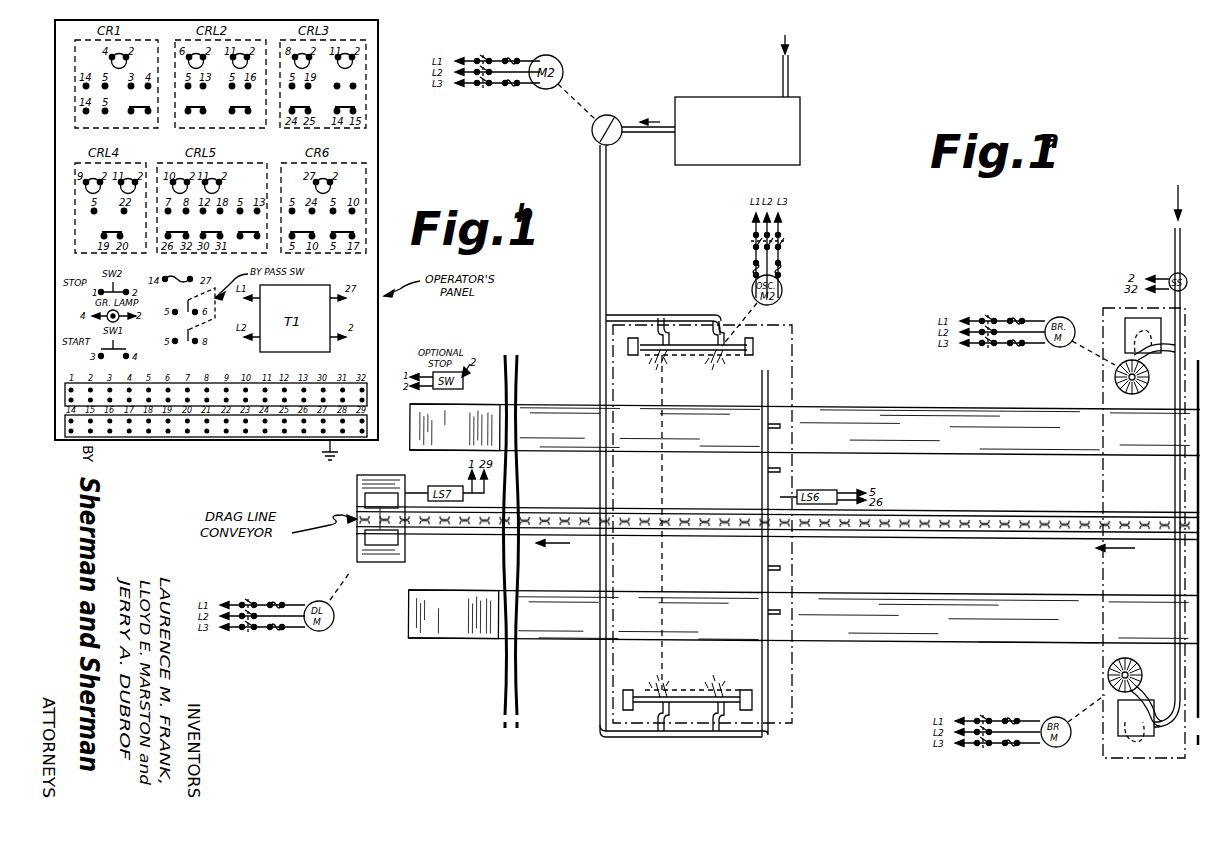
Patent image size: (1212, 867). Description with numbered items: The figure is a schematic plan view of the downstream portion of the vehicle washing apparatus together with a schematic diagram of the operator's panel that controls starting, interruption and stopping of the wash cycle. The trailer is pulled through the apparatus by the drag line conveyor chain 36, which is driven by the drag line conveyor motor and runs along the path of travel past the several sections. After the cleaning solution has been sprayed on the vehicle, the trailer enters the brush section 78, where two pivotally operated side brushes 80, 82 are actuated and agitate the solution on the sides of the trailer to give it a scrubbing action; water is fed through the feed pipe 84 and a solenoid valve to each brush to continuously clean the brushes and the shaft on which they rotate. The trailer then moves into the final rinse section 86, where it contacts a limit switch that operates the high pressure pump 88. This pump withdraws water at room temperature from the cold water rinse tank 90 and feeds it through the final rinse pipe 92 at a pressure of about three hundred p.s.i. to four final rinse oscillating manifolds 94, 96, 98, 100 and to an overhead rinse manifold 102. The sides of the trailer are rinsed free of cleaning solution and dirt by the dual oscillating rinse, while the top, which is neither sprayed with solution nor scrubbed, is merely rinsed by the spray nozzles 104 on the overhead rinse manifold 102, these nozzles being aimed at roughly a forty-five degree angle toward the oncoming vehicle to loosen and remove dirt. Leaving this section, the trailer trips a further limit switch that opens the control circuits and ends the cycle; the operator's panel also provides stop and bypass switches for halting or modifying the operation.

The drag line conveyor chain 36 is at (1030, 510).
The brush section 78 is at (1103, 495).
The side brush 80 is at (1108, 664).
The side brush 82 is at (1113, 377).
The feed pipe 84 is at (1173, 241).
The final rinse section 86 is at (796, 574).
The high pressure pump 88 is at (592, 129).
The cold water rinse tank 90 is at (726, 98).
The final rinse pipe 92 is at (608, 207).
The final rinse oscillating manifold 94 is at (707, 363).
The final rinse oscillating manifold 96 is at (651, 360).
The final rinse oscillating manifold 98 is at (708, 689).
The final rinse oscillating manifold 100 is at (653, 689).
The overhead rinse manifold 102 is at (762, 547).
The spray nozzles 104 is at (780, 470).